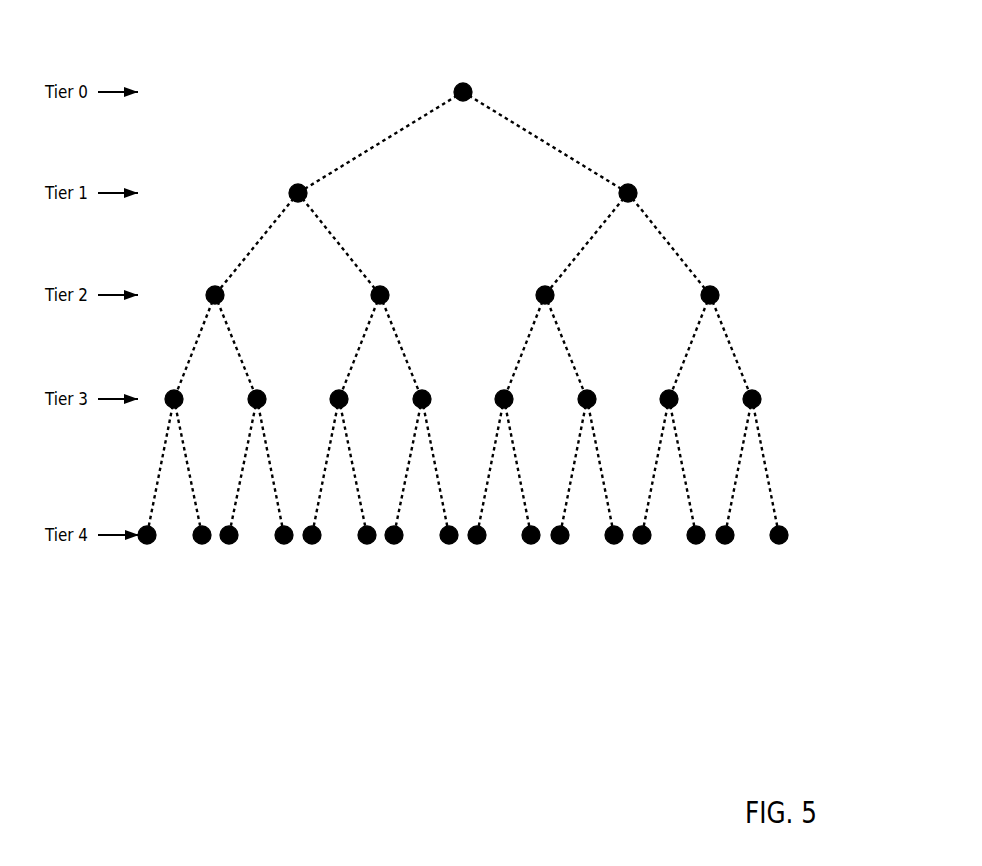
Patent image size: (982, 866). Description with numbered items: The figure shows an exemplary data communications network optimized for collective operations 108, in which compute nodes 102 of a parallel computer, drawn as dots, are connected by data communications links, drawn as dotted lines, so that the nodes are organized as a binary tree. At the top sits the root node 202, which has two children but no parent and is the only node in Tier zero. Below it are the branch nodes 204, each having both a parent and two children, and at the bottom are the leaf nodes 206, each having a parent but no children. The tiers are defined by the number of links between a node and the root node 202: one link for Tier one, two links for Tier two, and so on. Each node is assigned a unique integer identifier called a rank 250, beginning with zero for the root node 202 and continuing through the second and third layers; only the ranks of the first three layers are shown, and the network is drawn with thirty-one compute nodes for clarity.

The data communications network optimized for collective operations 108 is at (506, 397).
The compute nodes 102 is at (530, 544).
The root node 202 is at (479, 83).
The branch nodes 204 is at (797, 145).
The leaf nodes 206 is at (797, 453).
The rank 250 is at (594, 203).